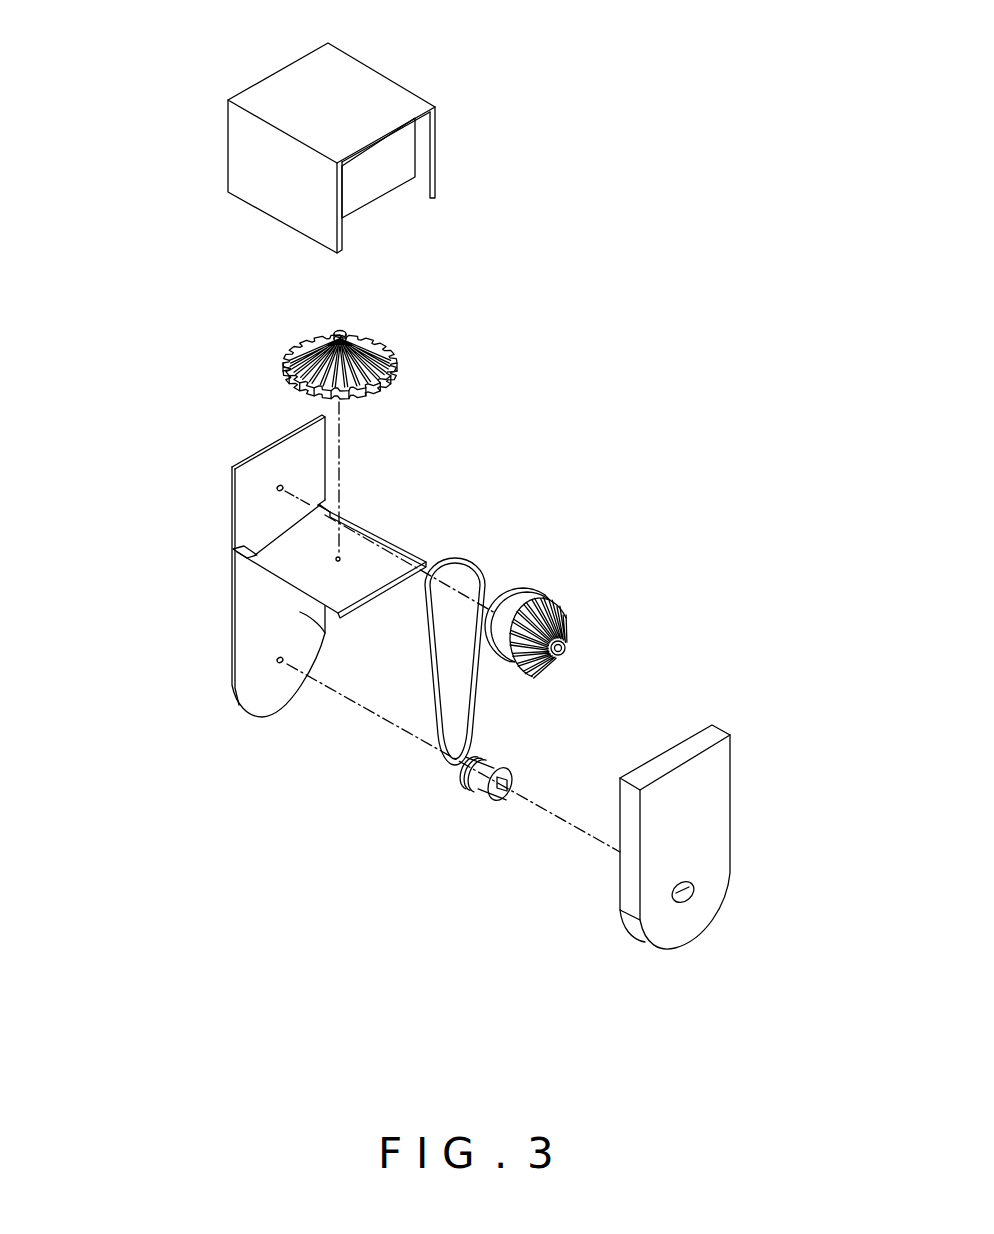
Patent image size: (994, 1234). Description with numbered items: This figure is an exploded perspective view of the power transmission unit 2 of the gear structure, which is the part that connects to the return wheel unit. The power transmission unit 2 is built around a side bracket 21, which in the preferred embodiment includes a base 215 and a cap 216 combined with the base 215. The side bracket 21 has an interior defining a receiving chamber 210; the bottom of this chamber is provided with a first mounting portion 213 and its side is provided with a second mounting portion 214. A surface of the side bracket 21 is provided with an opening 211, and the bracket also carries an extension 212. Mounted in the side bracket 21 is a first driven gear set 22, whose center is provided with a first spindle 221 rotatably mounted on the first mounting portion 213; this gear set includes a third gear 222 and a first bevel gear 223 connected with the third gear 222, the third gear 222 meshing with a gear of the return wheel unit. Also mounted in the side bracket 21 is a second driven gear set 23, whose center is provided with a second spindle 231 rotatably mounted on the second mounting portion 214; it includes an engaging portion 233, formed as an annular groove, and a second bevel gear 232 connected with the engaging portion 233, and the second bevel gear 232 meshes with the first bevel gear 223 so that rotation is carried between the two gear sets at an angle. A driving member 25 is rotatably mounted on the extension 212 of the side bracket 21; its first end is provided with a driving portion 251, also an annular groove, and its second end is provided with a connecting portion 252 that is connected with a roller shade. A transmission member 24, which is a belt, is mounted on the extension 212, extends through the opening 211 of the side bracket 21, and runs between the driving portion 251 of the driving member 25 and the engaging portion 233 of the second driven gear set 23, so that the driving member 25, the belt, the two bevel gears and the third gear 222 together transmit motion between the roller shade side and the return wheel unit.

The power transmission unit 2 is at (610, 312).
The side bracket 21 is at (253, 208).
The receiving chamber 210 is at (405, 187).
The opening 211 is at (257, 553).
The extension 212 is at (233, 647).
The first mounting portion 213 is at (338, 556).
The second mounting portion 214 is at (280, 485).
The base 215 is at (233, 552).
The cap 216 is at (398, 102).
The first driven gear set 22 is at (339, 336).
The first spindle 221 is at (352, 341).
The third gear 222 is at (356, 397).
The first bevel gear 223 is at (300, 344).
The second driven gear set 23 is at (540, 603).
The second spindle 231 is at (566, 647).
The second bevel gear 232 is at (543, 673).
The engaging portion 233 is at (500, 600).
The transmission member 24 is at (432, 723).
The driving member 25 is at (482, 798).
The driving portion 251 is at (483, 762).
The connecting portion 252 is at (502, 790).